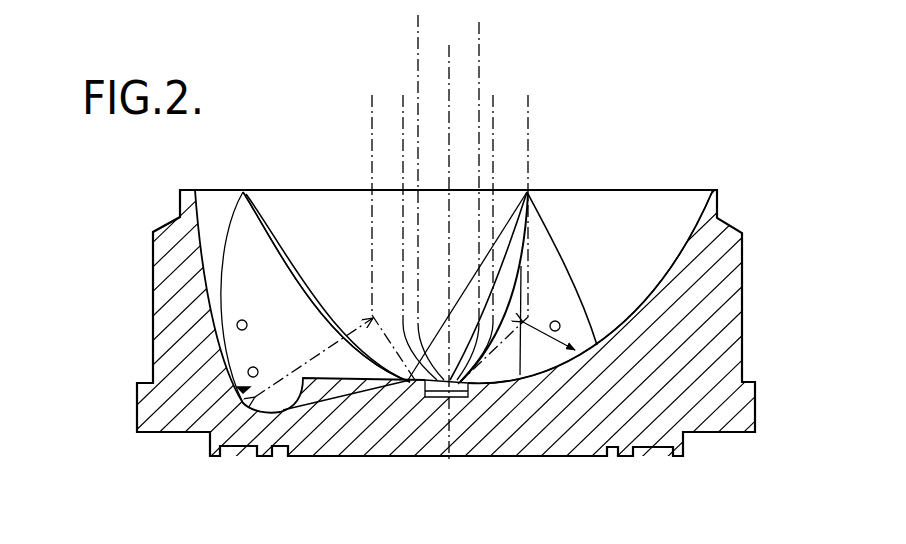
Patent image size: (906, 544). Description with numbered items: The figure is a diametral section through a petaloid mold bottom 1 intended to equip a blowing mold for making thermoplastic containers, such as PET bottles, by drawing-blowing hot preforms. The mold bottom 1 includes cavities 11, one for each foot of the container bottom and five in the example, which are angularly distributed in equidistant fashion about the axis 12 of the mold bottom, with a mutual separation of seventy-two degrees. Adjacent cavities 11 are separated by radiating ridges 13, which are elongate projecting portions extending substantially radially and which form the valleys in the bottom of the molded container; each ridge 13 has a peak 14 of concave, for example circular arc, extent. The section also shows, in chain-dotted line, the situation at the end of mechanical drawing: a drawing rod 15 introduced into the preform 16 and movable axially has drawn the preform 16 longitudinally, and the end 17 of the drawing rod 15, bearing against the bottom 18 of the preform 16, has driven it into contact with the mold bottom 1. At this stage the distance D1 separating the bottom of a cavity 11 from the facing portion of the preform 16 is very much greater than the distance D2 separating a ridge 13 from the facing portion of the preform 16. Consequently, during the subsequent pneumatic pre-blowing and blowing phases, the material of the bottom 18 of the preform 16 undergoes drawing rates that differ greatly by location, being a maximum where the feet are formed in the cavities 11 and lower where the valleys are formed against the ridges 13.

The mold bottom 1 is at (143, 287).
The cavity 11 is at (202, 433).
The axis 12 is at (449, 60).
The radiating ridge 13 is at (330, 372).
The peak 14 is at (271, 255).
The drawing rod 15 is at (482, 44).
The preform 16 is at (531, 118).
The end of the drawing rod 17 is at (468, 385).
The bottom of the preform 18 is at (417, 383).
The distance D1 is at (318, 358).
The distance D2 is at (538, 326).